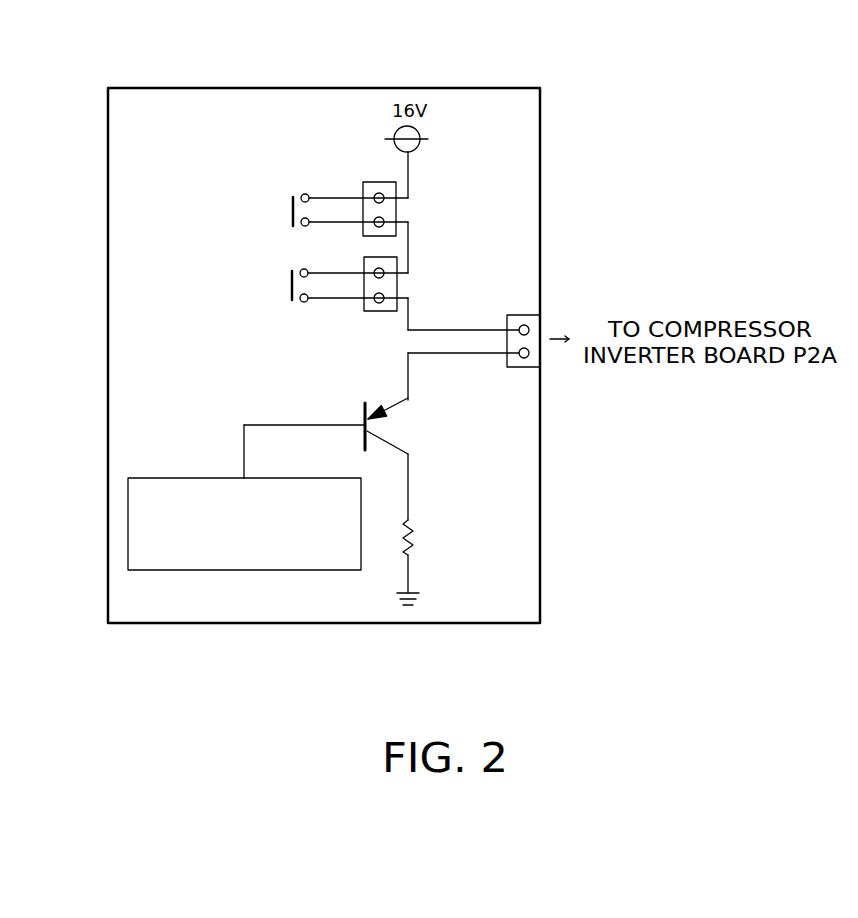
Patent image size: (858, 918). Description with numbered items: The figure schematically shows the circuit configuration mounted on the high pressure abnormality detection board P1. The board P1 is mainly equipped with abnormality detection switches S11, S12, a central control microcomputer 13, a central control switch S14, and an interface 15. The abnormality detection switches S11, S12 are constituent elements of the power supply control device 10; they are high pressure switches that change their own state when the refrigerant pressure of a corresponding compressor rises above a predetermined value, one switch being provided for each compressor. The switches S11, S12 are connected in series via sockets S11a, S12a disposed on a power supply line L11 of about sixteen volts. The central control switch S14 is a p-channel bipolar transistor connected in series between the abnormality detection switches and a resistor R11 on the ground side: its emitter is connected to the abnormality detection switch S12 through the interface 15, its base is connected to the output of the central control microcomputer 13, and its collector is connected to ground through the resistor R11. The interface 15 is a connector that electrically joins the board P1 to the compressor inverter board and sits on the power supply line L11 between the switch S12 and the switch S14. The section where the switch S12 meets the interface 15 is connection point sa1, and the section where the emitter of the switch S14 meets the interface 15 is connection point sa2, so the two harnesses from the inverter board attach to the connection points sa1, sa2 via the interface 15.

The high pressure abnormality detection board P1 is at (465, 87).
The power supply control device 10 is at (269, 245).
The abnormality detection switch S11 is at (290, 206).
The abnormality detection switch S12 is at (290, 281).
The socket S11a is at (370, 192).
The socket S12a is at (368, 263).
The power supply line L11 is at (383, 199).
The interface 15 is at (502, 317).
The connection point sa1 is at (497, 321).
The connection point sa2 is at (497, 362).
The central control switch S14 is at (392, 400).
The resistor R11 is at (429, 537).
The central control microcomputer 13 is at (168, 471).